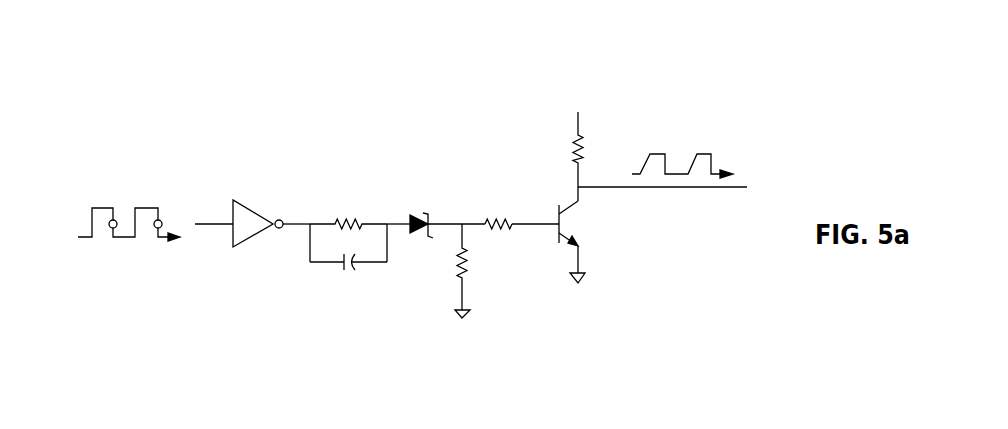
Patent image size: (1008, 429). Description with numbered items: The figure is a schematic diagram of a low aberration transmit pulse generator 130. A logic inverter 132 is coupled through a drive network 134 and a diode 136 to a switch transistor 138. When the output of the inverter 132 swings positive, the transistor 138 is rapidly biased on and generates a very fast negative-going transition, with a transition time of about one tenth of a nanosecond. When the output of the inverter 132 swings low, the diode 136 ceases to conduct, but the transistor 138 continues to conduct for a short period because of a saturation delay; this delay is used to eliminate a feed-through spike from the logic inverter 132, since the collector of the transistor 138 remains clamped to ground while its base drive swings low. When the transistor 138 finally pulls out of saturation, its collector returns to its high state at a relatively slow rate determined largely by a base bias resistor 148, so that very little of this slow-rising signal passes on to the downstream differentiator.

The low aberration transmit pulse generator 130 is at (190, 84).
The logic inverter 132 is at (256, 214).
The drive network 134 is at (342, 175).
The diode 136 is at (422, 212).
The switch transistor 138 is at (578, 225).
The base bias resistor 148 is at (450, 268).